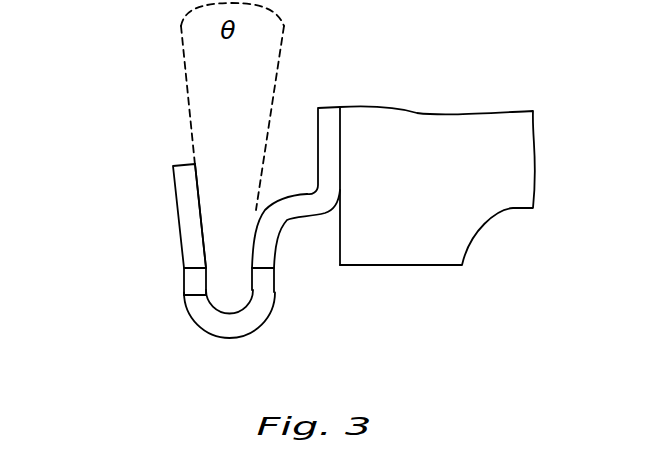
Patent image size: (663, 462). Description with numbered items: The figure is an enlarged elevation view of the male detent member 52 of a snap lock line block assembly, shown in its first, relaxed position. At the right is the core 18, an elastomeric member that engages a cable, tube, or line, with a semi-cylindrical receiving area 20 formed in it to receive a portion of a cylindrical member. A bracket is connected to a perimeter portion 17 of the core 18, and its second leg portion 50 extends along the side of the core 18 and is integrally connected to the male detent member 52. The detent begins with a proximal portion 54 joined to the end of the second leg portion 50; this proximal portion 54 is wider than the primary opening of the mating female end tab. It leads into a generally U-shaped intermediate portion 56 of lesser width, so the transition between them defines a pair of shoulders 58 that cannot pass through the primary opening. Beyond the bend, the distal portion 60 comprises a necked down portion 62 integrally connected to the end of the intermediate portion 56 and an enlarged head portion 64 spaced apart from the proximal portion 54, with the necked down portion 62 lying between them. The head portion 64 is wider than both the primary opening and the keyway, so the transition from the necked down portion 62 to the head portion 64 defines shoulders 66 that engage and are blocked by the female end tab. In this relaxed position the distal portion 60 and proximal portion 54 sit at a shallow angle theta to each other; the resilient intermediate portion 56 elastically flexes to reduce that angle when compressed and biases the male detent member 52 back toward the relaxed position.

The perimeter portion 17 is at (377, 127).
The core 18 is at (465, 127).
The receiving area 20 is at (480, 225).
The second leg portion 50 is at (325, 125).
The male detent member 52 is at (152, 165).
The proximal portion 54 is at (290, 205).
The U-shaped intermediate portion 56 is at (240, 327).
The shoulders 58 is at (262, 273).
The distal portion 60 is at (175, 207).
The necked down portion 62 is at (197, 282).
The head portion 64 is at (193, 252).
The shoulders 66 is at (190, 298).